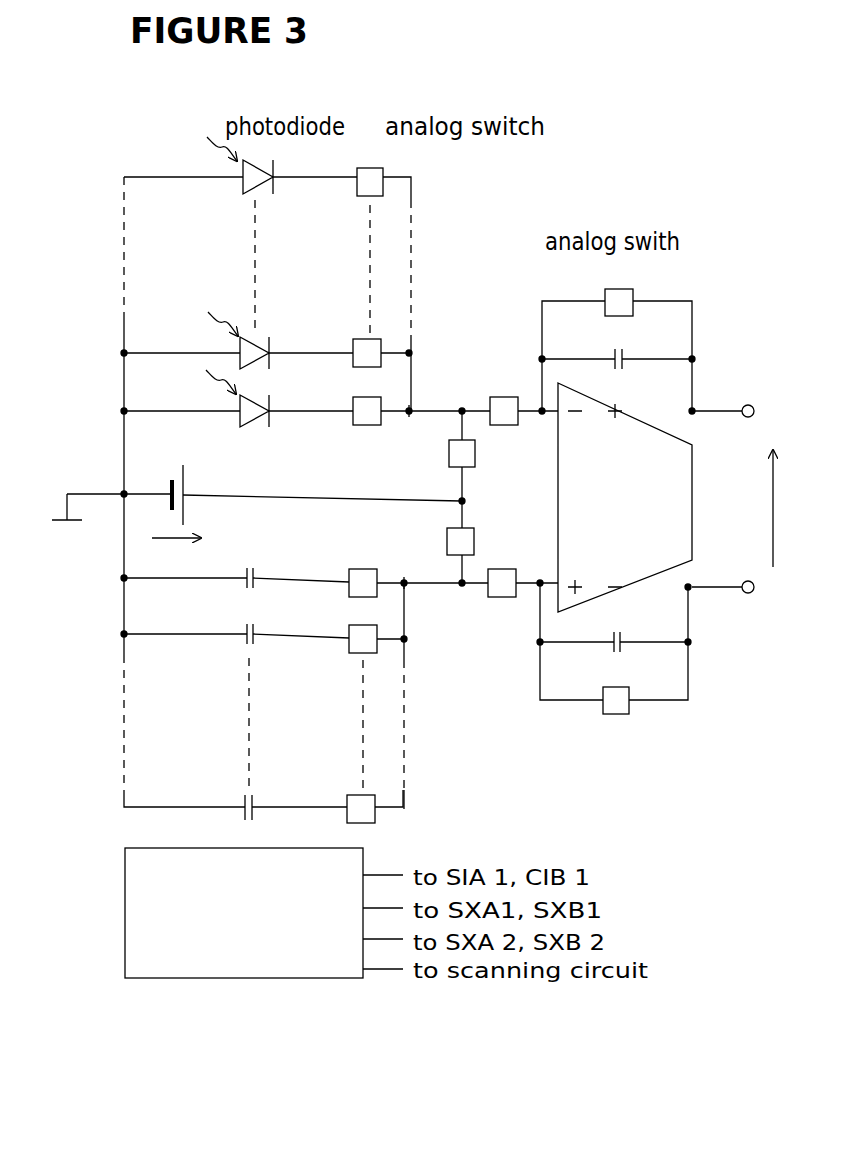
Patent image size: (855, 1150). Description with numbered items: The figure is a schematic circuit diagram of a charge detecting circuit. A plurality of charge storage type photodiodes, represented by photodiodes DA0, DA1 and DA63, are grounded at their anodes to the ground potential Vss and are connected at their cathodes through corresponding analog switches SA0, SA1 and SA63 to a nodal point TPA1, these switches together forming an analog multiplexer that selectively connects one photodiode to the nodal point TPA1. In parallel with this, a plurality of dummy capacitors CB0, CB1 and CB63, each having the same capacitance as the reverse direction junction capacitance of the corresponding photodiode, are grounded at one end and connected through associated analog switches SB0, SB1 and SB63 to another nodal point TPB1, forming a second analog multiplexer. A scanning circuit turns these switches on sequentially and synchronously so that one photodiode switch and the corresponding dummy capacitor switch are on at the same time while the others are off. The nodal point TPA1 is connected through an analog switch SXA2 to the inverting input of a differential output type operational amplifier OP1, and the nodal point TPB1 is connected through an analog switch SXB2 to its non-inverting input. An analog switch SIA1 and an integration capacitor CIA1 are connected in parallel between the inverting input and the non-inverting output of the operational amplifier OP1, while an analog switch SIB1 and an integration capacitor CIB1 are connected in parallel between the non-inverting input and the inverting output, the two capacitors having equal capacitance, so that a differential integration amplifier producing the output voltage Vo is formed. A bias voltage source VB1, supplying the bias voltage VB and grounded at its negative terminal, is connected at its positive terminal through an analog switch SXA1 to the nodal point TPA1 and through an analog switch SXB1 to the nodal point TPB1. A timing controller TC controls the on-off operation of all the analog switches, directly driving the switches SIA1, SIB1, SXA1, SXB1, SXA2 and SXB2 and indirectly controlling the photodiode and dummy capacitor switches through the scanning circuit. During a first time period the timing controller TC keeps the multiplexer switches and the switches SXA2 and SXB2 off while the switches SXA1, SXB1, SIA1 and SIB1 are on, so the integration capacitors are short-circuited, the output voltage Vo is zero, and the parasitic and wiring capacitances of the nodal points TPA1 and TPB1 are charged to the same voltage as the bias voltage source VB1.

The photodiode DA63 is at (300, 156).
The analog switch SA63 is at (383, 172).
The photodiode DA1 is at (270, 342).
The photodiode DA0 is at (269, 398).
The analog switch SA1 is at (381, 342).
The analog switch SA0 is at (381, 398).
The analog switch SXA2 is at (497, 397).
The analog switch SXA1 is at (475, 446).
The nodal point TPA1 is at (420, 413).
The analog switch SXB1 is at (474, 542).
The analog switch SXB2 is at (502, 597).
The nodal point TPB1 is at (419, 578).
The bias voltage source VB1 is at (184, 478).
The bias voltage VB is at (195, 540).
The ground potential Vss is at (69, 528).
The dummy capacitor CB0 is at (253, 568).
The dummy capacitor CB1 is at (253, 626).
The dummy capacitor CB63 is at (252, 798).
The analog switch SB0 is at (377, 590).
The analog switch SB1 is at (377, 647).
The analog switch SB63 is at (375, 803).
The operational amplifier OP1 is at (692, 487).
The analog switch SIA1 is at (617, 289).
The integration capacitor CIA1 is at (620, 334).
The integration capacitor CIB1 is at (617, 632).
The analog switch SIB1 is at (629, 708).
The output voltage Vo is at (789, 508).
The timing controller TC is at (240, 978).